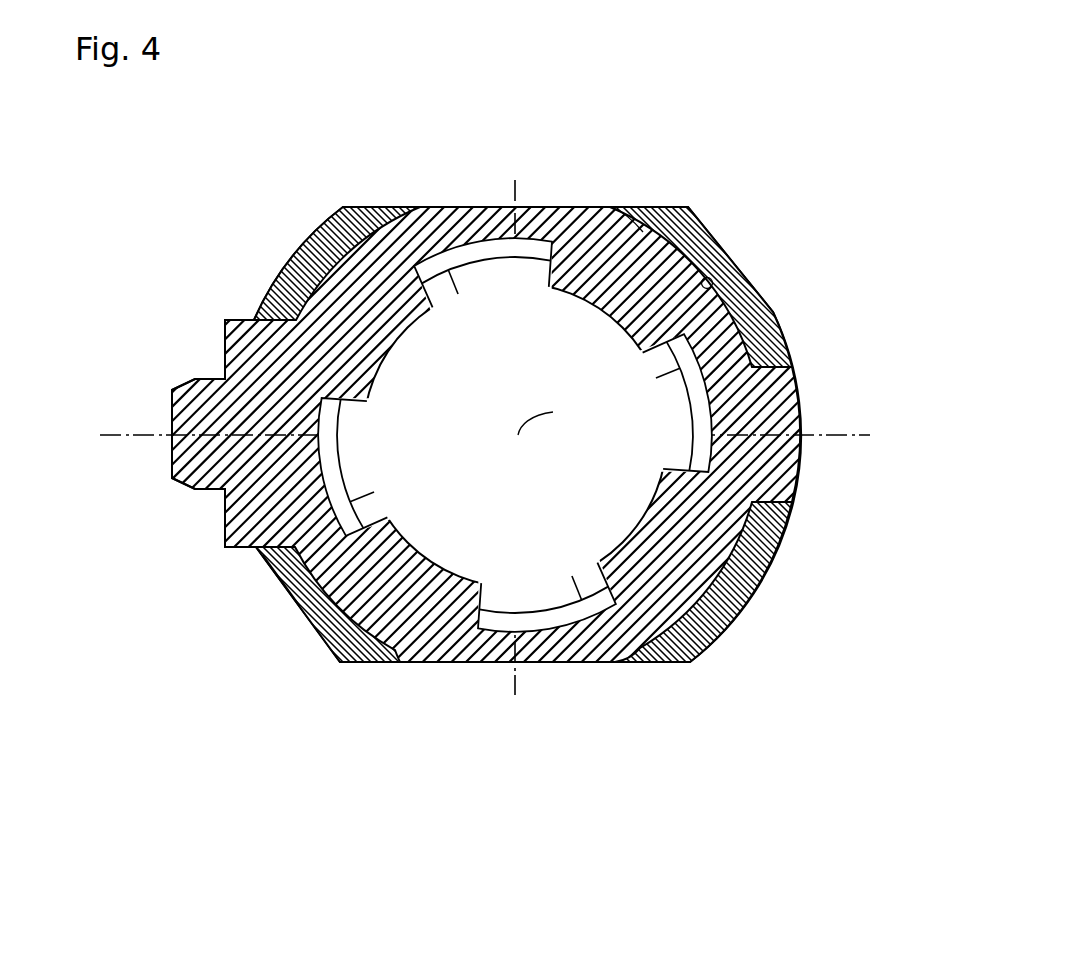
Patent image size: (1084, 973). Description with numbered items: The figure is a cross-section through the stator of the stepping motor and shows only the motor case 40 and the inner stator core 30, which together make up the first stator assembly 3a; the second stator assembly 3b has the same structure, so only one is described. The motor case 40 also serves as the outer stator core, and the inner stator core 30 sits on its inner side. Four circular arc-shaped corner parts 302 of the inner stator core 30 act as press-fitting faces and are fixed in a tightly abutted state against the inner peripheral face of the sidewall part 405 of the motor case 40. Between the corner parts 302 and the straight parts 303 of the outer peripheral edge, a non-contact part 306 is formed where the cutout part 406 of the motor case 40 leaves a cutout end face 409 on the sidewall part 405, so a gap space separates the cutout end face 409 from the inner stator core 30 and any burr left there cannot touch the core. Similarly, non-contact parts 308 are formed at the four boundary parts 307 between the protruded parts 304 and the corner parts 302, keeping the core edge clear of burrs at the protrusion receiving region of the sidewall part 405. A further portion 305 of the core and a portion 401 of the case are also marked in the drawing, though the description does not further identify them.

The first stator assembly 3a is at (542, 429).
The second stator assembly 3b is at (542, 429).
The inner stator core 30 is at (542, 467).
The motor case 40 is at (542, 444).
The sidewall part 405 is at (542, 444).
The corner parts 302 is at (737, 258).
The straight parts 303 is at (515, 446).
The protruded parts 304 is at (237, 415).
The edge 305 is at (622, 206).
The non-contact part 306 is at (639, 207).
The boundary parts 307 is at (266, 604).
The non-contact parts 308 is at (262, 557).
The key 401 is at (540, 600).
The cutout part 406 is at (460, 206).
The cutout end face 409 is at (651, 204).